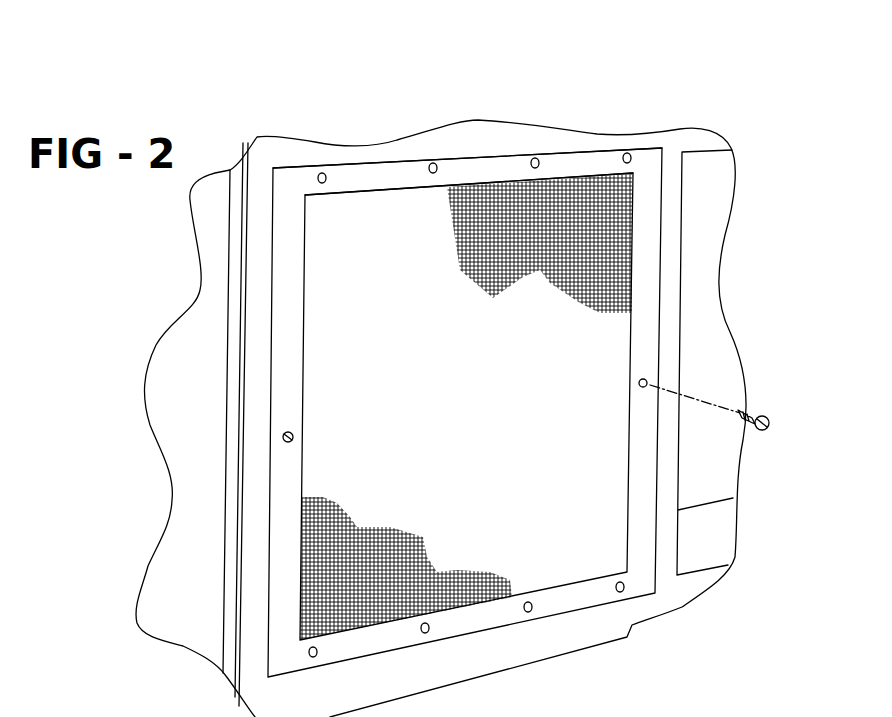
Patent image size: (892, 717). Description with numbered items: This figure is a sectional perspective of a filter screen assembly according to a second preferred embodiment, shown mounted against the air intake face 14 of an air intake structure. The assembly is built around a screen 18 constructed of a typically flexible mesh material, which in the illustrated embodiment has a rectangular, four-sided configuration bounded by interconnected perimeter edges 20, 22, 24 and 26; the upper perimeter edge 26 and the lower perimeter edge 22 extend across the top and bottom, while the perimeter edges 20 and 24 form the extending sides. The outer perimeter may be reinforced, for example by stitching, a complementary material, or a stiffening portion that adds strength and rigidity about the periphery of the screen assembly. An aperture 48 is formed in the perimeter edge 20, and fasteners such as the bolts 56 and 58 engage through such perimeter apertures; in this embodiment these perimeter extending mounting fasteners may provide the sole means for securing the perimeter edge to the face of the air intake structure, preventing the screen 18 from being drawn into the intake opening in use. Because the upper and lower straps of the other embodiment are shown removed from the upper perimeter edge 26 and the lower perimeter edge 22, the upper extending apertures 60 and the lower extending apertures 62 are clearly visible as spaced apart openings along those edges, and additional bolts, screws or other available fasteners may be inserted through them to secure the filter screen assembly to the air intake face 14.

The air intake face 14 is at (273, 156).
The screen 18 is at (400, 362).
The perimeter edge 20 is at (643, 245).
The lower perimeter edge 22 is at (480, 615).
The perimeter edge 24 is at (287, 475).
The upper perimeter edge 26 is at (374, 180).
The aperture 48 is at (643, 379).
The bolt 56 is at (755, 410).
The bolt 58 is at (286, 432).
The upper extending apertures 60 is at (627, 153).
The lower extending apertures 62 is at (317, 653).